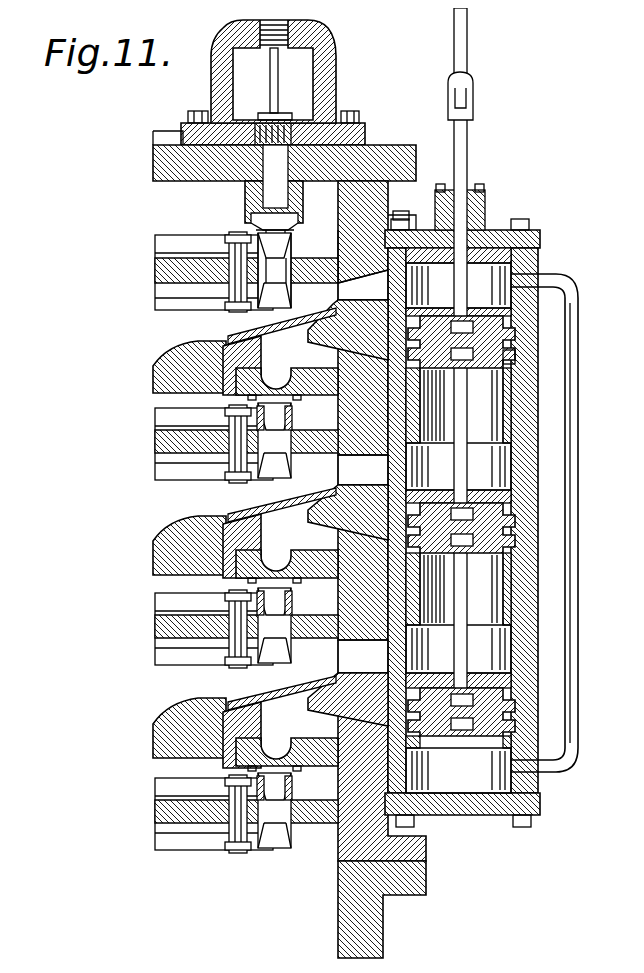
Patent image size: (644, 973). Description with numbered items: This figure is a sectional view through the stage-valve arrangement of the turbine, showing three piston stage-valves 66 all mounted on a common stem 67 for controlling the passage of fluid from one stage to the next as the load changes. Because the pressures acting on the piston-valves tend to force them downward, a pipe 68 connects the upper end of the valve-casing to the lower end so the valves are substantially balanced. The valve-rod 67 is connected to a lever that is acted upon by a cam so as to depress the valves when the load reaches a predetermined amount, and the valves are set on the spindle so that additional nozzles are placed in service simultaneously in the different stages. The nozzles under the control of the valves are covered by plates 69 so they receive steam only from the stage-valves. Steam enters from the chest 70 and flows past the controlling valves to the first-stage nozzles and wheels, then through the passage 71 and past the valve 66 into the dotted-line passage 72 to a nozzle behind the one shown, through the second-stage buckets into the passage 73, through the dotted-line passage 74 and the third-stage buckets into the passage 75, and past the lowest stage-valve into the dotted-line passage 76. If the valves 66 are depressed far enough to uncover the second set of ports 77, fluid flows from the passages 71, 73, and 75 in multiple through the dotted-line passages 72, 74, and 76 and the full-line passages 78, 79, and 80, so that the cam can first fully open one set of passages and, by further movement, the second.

The piston stage-valve 66 is at (500, 335).
The stem 67 is at (461, 140).
The pipe 68 is at (571, 459).
The plates 69 is at (242, 326).
The chest 70 is at (331, 74).
The passage 71 is at (363, 289).
The dotted-line passage 72 is at (335, 303).
The passage 73 is at (363, 470).
The dotted-line passage 74 is at (333, 487).
The passage 75 is at (363, 656).
The dotted-line passage 76 is at (333, 675).
The second set of ports 77 is at (507, 351).
The full-line passage 78 is at (290, 362).
The full-line passage 79 is at (290, 545).
The full-line passage 80 is at (300, 735).